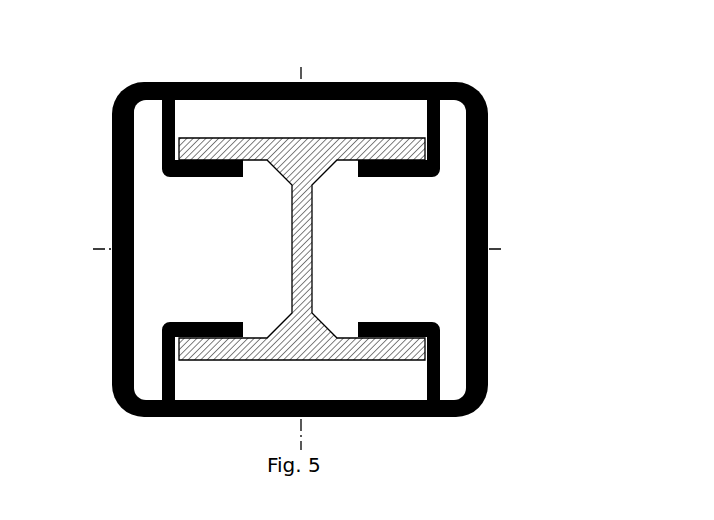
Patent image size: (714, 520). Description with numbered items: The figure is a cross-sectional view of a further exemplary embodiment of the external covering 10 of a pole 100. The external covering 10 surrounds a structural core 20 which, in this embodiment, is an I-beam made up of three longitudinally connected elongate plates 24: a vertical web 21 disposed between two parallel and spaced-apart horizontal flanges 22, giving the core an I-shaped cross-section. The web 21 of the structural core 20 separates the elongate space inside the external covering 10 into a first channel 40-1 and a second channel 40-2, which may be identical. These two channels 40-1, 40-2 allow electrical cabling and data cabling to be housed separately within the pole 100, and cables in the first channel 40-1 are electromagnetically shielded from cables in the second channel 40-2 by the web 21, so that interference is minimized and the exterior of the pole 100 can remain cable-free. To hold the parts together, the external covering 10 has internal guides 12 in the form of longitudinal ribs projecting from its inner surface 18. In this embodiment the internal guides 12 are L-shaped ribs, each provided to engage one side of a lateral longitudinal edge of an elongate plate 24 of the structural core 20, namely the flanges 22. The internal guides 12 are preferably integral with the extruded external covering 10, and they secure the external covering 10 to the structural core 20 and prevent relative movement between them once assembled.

The pole 100 is at (532, 40).
The external covering 10 is at (488, 140).
The internal guides 12 is at (163, 130).
The inner surface 18 is at (390, 101).
The structural core 20 is at (292, 195).
The vertical web 21 is at (312, 218).
The horizontal flanges 22 is at (218, 142).
The elongate plates 24 is at (380, 252).
The first channel 40-1 is at (178, 285).
The second channel 40-2 is at (420, 283).